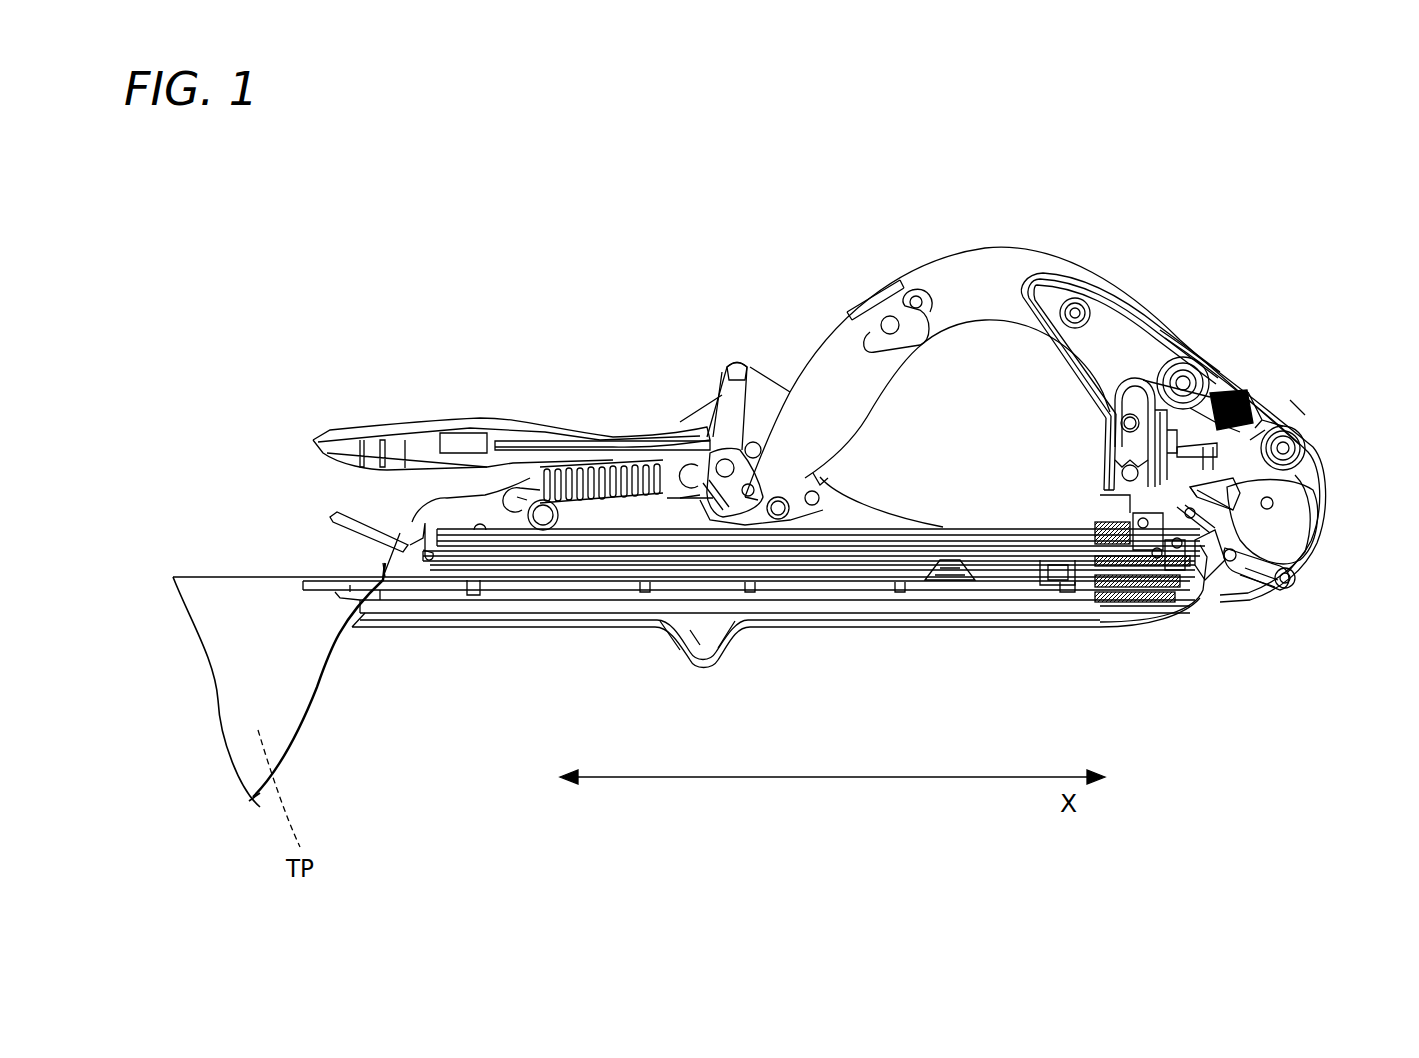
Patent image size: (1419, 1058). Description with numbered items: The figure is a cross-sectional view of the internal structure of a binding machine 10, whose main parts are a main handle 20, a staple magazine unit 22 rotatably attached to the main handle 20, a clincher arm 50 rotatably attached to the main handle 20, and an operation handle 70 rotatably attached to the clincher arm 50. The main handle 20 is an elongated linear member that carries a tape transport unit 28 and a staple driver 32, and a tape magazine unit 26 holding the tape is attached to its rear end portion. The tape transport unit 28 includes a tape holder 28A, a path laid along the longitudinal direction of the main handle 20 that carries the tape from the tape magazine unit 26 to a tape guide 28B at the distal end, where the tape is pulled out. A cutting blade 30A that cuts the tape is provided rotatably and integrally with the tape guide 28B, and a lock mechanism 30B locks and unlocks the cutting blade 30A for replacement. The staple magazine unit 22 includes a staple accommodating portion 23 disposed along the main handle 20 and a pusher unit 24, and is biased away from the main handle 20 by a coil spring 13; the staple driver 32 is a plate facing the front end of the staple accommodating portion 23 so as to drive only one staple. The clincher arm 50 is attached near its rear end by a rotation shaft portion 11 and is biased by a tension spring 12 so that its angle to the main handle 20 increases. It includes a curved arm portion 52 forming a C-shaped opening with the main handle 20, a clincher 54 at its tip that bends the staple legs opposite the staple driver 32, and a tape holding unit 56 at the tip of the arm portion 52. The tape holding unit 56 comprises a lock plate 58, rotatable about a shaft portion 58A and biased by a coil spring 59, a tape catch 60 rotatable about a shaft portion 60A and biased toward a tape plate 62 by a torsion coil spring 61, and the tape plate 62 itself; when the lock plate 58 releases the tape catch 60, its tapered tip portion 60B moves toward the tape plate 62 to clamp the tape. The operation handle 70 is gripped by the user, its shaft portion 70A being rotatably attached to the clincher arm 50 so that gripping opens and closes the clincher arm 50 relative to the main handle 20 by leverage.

The binding machine 10 is at (836, 842).
The rotation shaft portion 11 is at (515, 493).
The tension spring 12 is at (587, 467).
The coil spring 13 is at (950, 577).
The main handle 20 is at (733, 645).
The staple magazine unit 22 is at (946, 526).
The staple accommodating portion 23 is at (990, 550).
The pusher unit 24 is at (350, 520).
The tape magazine unit 26 is at (290, 707).
The tape transport unit 28 is at (793, 620).
The tape holder 28A is at (480, 610).
The tape guide 28B is at (1210, 532).
The cutting blade 30A is at (1176, 552).
The lock mechanism 30B is at (1200, 600).
The staple driver 32 is at (1055, 590).
The clincher arm 50 is at (830, 307).
The arm portion 52 is at (955, 264).
The clincher 54 is at (1117, 503).
The tape holding unit 56 is at (1332, 546).
The lock plate 58 is at (1146, 400).
The shaft portion 58A is at (1130, 414).
The coil spring 59 is at (1245, 382).
The tape catch 60 is at (1270, 487).
The shaft portion 60A is at (1231, 562).
The tip portion 60B is at (1250, 460).
The torsion coil spring 61 is at (1227, 487).
The tape plate 62 is at (1123, 467).
The operation handle 70 is at (641, 428).
The shaft portion 70A is at (720, 423).